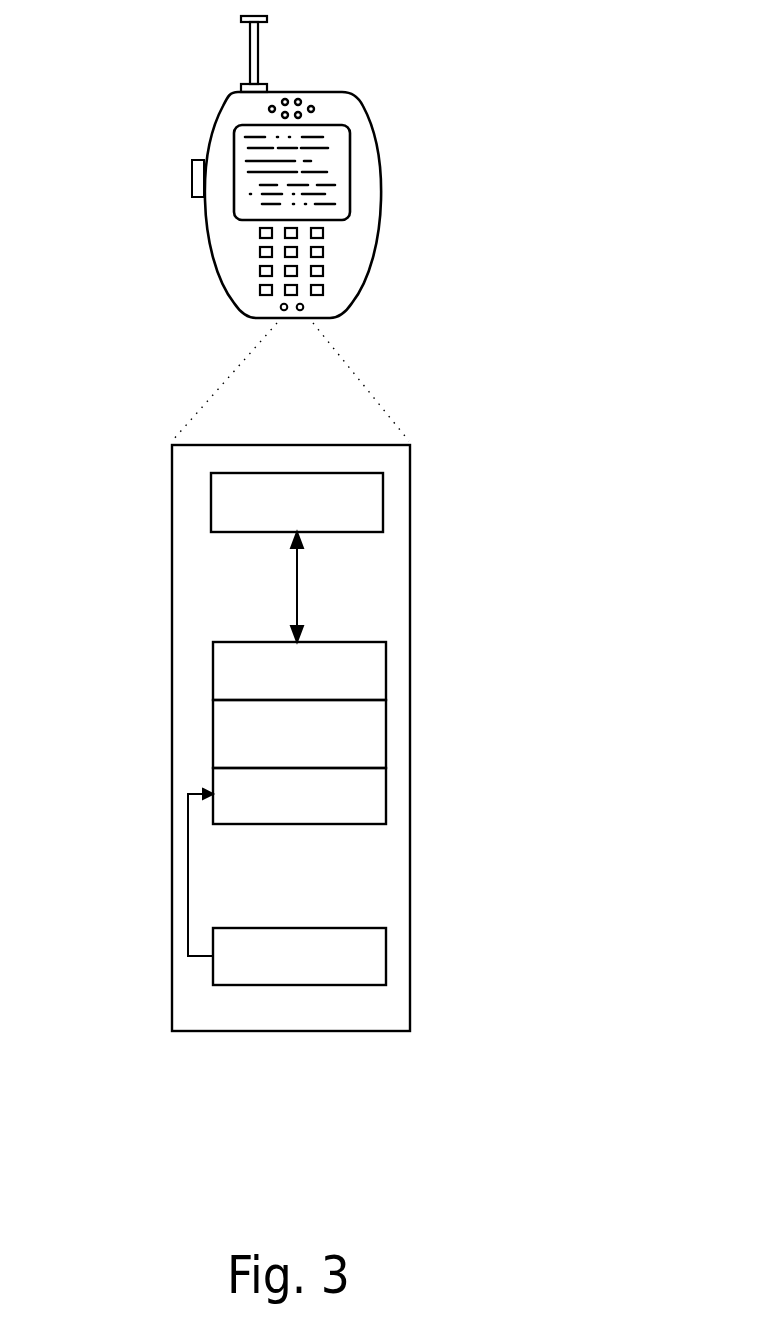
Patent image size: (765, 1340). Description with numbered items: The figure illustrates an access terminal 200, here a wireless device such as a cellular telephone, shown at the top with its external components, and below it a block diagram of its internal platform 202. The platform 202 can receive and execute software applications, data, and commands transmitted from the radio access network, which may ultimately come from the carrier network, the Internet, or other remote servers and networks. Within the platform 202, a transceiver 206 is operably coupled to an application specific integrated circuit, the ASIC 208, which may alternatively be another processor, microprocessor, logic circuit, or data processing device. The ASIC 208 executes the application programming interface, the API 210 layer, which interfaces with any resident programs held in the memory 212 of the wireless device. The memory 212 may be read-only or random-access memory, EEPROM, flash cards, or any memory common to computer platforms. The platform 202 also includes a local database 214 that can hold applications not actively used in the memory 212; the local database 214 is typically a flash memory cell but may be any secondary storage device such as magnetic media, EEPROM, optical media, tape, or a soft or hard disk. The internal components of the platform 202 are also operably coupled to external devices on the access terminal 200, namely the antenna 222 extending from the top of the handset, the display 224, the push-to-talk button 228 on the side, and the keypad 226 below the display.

The access terminal 200 is at (358, 297).
The platform 202 is at (172, 643).
The transceiver 206 is at (383, 503).
The application specific integrated circuit 208 is at (386, 678).
The application programming interface 210 is at (386, 728).
The memory 212 is at (386, 794).
The local database 214 is at (386, 938).
The antenna 222 is at (259, 32).
The display 224 is at (350, 158).
The keypad 226 is at (323, 252).
The push-to-talk button 228 is at (192, 169).